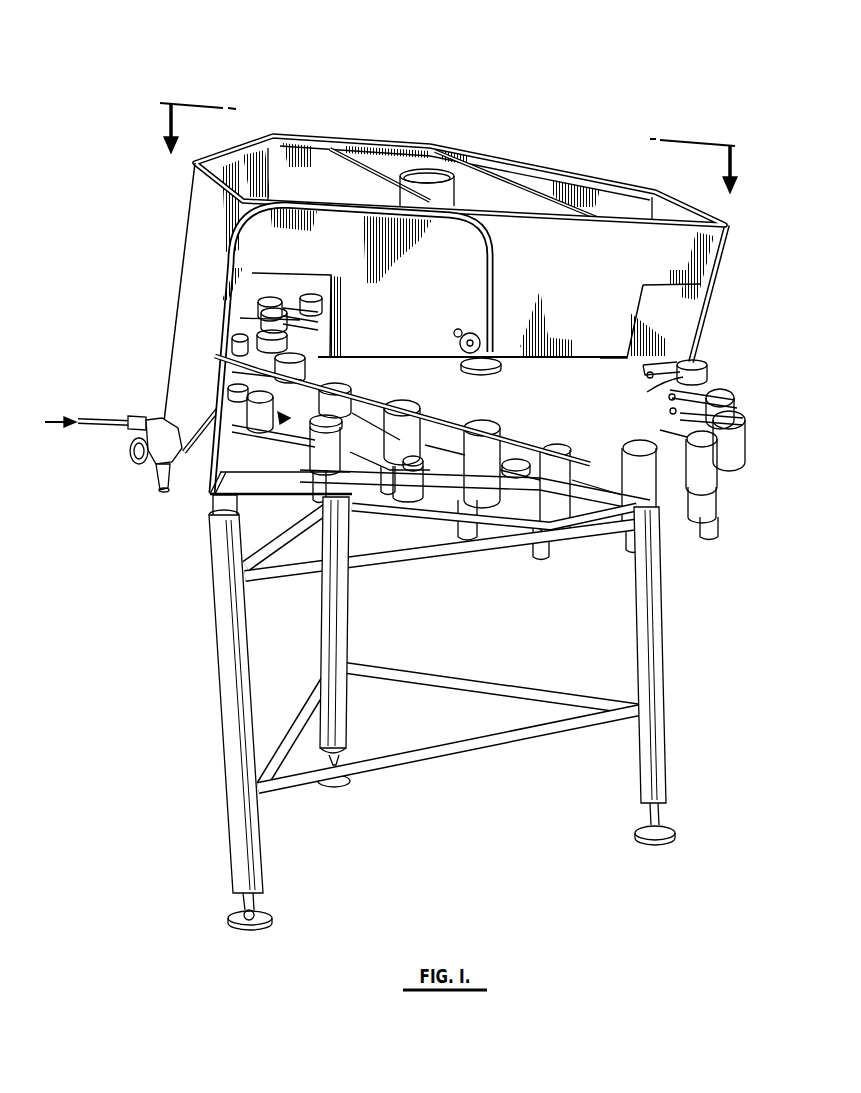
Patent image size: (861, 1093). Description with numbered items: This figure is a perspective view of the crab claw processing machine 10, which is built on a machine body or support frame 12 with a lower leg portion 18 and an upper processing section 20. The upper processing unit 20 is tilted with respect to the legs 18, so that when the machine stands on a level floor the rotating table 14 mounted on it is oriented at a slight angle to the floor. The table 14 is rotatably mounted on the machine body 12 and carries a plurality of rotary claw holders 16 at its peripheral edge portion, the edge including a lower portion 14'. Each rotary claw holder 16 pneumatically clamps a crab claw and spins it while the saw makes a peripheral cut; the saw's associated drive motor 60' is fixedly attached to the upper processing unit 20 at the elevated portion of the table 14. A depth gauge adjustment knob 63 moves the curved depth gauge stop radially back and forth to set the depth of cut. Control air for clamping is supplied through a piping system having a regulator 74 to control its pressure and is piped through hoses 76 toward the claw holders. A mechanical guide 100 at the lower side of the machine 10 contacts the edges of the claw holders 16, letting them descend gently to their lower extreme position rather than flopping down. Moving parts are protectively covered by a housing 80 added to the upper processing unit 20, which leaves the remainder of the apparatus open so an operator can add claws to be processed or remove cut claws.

The crab claw processing machine 10 is at (290, 75).
The machine body 12 is at (176, 571).
The table 14 is at (477, 419).
The lower portion 14' is at (494, 524).
The rotary claw holder 16 is at (333, 387).
The lower leg portion 18 is at (233, 710).
The upper processing section 20 is at (186, 316).
The drive motor 60' is at (436, 158).
The depth gauge adjustment knob 63 is at (463, 333).
The regulator 74 is at (160, 468).
The hoses 76 is at (482, 250).
The housing 80 is at (350, 142).
The mechanical guide 100 is at (525, 448).